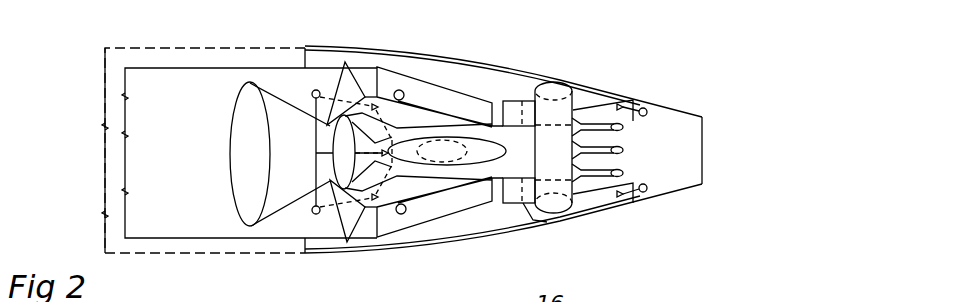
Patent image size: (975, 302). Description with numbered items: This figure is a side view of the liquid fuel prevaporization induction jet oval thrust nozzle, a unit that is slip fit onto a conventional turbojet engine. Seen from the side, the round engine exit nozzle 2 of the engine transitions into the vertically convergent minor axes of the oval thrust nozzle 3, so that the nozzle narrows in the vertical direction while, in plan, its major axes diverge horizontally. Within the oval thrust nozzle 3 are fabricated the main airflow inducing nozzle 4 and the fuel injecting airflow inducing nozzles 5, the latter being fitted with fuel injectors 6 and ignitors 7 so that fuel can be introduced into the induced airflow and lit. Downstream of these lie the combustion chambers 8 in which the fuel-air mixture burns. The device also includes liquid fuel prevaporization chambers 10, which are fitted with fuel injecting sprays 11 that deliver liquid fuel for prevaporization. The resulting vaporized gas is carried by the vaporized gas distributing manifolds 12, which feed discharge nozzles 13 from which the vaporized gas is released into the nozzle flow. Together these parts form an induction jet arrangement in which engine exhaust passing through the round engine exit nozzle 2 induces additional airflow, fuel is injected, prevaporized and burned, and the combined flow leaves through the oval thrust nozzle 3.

The round engine exit nozzle 2 is at (494, 107).
The oval thrust nozzle 3 is at (703, 140).
The main airflow inducing nozzle 4 is at (270, 92).
The fuel injecting airflow inducing nozzles 5 is at (355, 82).
The fuel injectors 6 is at (378, 104).
The ignitors 7 is at (403, 91).
The combustion chambers 8 is at (199, 126).
The liquid fuel prevaporization chambers 10 is at (612, 100).
The fuel injecting sprays 11 is at (623, 106).
The vaporized gas distributing manifolds 12 is at (556, 90).
The discharge nozzles 13 is at (582, 124).